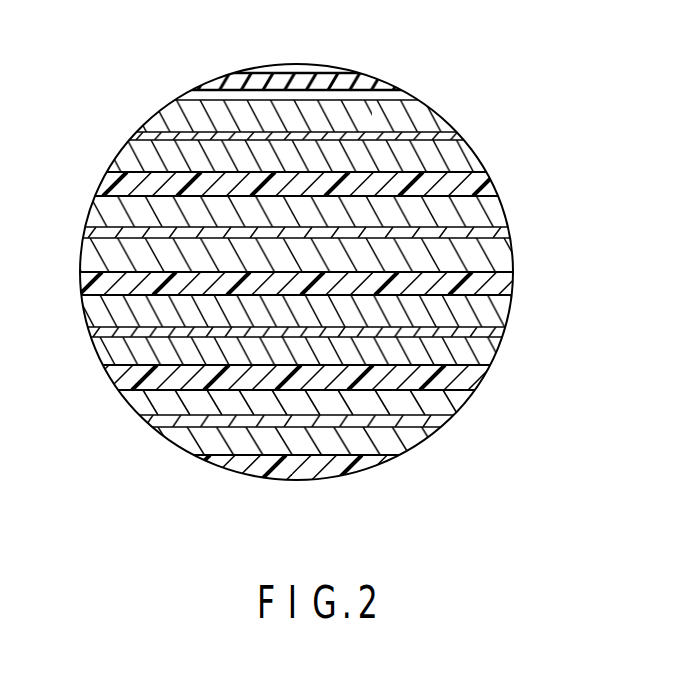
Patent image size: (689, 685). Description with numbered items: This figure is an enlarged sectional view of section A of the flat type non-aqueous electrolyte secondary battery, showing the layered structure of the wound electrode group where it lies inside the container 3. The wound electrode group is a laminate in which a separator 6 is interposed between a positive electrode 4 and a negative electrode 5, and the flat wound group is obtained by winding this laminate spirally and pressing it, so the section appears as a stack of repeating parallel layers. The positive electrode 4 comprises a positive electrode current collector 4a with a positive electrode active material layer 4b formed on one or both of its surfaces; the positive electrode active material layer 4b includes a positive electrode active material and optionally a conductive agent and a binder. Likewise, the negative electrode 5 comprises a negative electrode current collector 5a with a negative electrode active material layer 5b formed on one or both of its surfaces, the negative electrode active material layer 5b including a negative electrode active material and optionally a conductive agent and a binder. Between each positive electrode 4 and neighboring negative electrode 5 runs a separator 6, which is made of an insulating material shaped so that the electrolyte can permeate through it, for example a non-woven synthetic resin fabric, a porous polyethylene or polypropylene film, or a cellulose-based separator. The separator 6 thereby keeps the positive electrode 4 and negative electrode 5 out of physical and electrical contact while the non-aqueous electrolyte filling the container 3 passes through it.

The section A is at (258, 68).
The container 3 is at (377, 74).
The positive electrode 4 is at (572, 173).
The positive electrode current collector 4a is at (485, 235).
The positive electrode active material layer 4b is at (475, 215).
The negative electrode 5 is at (543, 53).
The negative electrode current collector 5a is at (450, 138).
The negative electrode active material layer 5b is at (427, 122).
The separator 6 is at (118, 185).